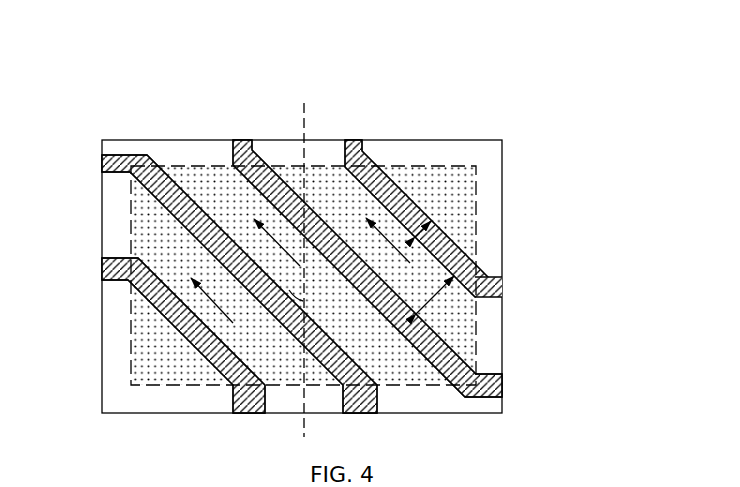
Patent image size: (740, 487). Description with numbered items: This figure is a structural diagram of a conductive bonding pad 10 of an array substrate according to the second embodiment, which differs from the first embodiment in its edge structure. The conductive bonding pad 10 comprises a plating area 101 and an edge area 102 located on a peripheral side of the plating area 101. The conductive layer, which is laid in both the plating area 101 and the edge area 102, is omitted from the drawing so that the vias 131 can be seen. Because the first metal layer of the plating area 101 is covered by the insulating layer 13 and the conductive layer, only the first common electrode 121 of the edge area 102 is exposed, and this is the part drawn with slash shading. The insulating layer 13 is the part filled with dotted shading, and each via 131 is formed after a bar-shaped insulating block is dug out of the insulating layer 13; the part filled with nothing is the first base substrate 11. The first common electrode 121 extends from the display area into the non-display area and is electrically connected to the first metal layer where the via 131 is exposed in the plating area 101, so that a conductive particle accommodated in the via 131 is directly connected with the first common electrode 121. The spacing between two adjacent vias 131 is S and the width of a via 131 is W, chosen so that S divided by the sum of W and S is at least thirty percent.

The conductive bonding pad 10 is at (320, 66).
The first base substrate 11 is at (488, 183).
The insulating layer 13 is at (457, 327).
The plating area 101 is at (303, 170).
The edge area 102 is at (180, 155).
The first common electrode 121 is at (500, 287).
The via 131 is at (450, 243).
The width of the via W is at (467, 195).
The spacing between adjacent vias S is at (435, 290).